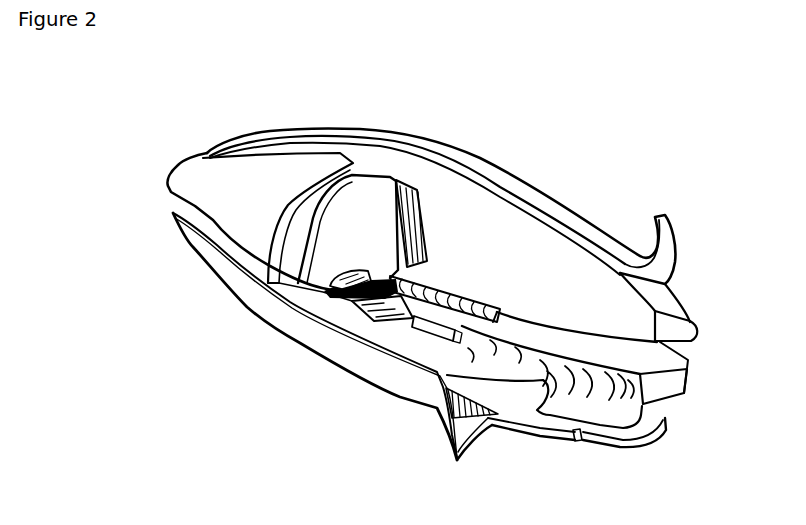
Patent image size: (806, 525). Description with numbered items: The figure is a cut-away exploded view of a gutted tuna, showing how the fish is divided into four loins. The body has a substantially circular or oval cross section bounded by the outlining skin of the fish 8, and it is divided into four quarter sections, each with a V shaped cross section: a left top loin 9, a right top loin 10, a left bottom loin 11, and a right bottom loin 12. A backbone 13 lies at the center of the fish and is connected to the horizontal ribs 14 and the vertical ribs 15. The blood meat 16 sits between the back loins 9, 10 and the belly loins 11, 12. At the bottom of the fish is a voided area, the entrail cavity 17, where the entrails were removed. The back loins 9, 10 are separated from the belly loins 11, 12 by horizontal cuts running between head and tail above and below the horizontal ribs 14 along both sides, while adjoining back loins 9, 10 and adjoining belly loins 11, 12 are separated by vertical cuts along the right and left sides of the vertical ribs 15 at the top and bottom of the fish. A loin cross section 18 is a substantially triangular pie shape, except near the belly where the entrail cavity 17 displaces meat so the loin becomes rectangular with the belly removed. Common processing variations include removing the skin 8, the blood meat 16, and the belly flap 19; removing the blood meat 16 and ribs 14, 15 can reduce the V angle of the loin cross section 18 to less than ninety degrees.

The skin of the fish 8 is at (293, 198).
The left top loin 9 is at (172, 172).
The right top loin 10 is at (238, 135).
The left bottom loin 11 is at (512, 398).
The right bottom loin 12 is at (670, 385).
The backbone 13 is at (440, 287).
The horizontal ribs 14 is at (435, 328).
The vertical ribs 15 is at (407, 197).
The blood meat 16 is at (333, 295).
The entrail cavity 17 is at (550, 360).
The loin cross section 18 is at (348, 229).
The belly flap 19 is at (660, 430).